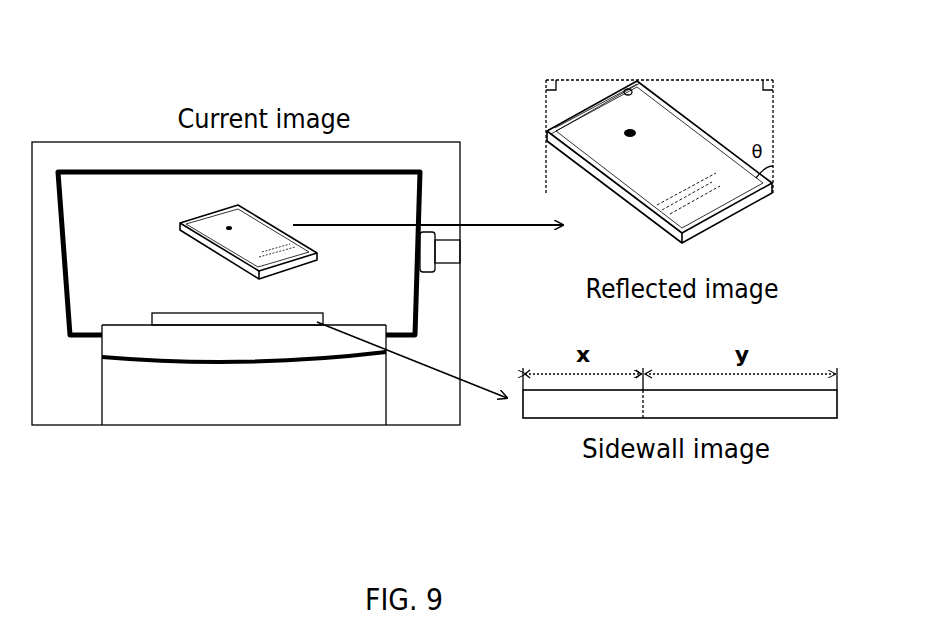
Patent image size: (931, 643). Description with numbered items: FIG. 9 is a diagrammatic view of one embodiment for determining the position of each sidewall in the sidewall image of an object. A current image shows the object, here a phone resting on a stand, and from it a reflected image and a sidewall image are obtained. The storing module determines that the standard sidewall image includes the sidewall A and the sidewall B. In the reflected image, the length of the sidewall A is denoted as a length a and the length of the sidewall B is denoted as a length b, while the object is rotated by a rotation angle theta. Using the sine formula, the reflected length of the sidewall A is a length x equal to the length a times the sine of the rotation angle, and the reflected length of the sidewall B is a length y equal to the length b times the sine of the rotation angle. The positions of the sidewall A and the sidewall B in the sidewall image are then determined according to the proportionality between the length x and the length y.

The length x is at (590, 62).
The length y is at (717, 62).
The length a is at (577, 97).
The length b is at (727, 125).
The sidewall A is at (585, 406).
The sidewall B is at (740, 406).